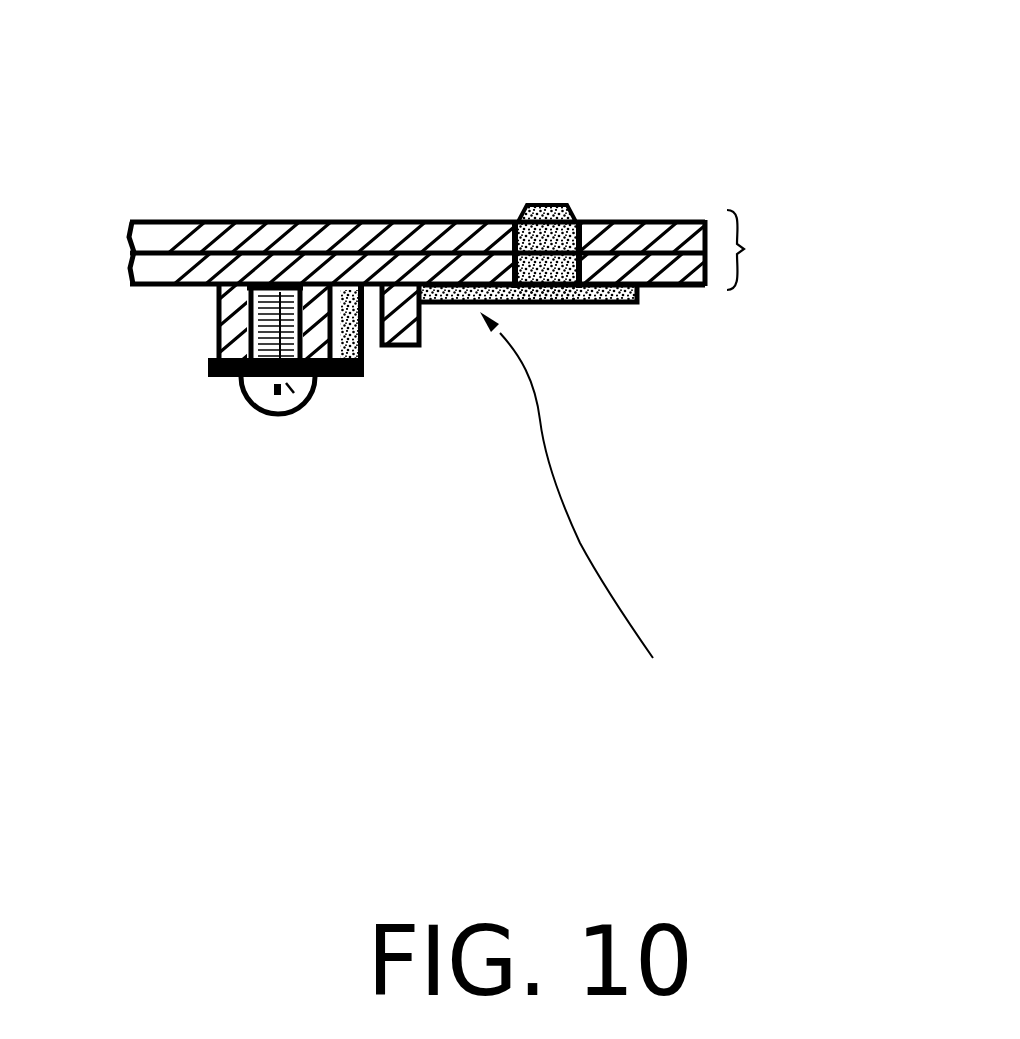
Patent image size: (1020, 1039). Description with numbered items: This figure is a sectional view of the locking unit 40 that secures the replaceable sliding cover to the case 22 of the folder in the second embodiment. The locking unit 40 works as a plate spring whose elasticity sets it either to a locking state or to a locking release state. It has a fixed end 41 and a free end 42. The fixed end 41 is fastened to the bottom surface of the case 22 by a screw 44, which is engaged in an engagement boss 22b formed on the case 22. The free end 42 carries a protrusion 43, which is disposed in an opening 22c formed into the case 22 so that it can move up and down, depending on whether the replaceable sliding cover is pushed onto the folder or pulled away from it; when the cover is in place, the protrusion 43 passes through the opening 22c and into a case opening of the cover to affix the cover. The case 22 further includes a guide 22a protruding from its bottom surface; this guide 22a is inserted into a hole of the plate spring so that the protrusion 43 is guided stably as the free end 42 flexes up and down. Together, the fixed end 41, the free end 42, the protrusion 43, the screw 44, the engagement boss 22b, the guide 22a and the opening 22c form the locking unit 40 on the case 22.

The case 22 is at (744, 249).
The guide 22a is at (420, 323).
The engagement boss 22b is at (225, 319).
The opening 22c is at (580, 220).
The locking unit 40 is at (582, 516).
The fixed end 41 is at (222, 380).
The free end 42 is at (592, 300).
The protrusion 43 is at (543, 205).
The screw 44 is at (303, 400).